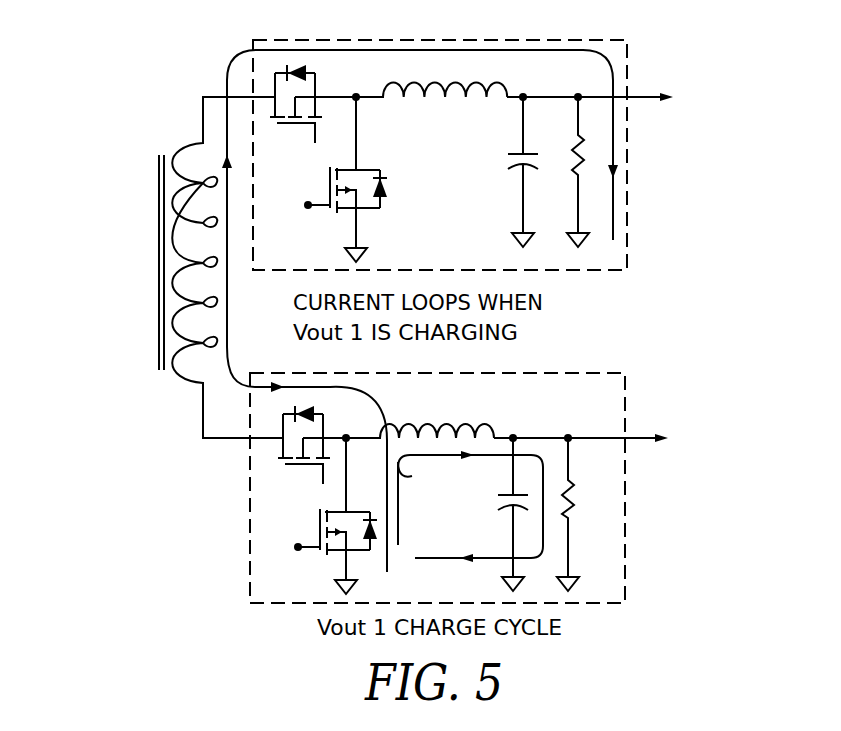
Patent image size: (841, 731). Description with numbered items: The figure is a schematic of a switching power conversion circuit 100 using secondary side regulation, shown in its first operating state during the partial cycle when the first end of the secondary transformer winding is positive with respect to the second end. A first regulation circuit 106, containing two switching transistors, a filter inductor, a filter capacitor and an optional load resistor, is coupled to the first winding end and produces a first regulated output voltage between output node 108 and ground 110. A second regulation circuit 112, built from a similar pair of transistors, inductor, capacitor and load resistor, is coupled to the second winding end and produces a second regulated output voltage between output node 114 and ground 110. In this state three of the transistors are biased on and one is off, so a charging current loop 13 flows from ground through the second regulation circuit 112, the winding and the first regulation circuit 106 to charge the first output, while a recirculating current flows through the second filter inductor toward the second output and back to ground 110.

The switching power conversion circuit 100 is at (118, 79).
The current loop 13 is at (227, 312).
The first regulation circuit 106 is at (552, 40).
The output node 108 is at (543, 97).
The ground 110 is at (583, 240).
The second regulation circuit 112 is at (572, 373).
The output node 114 is at (540, 438).